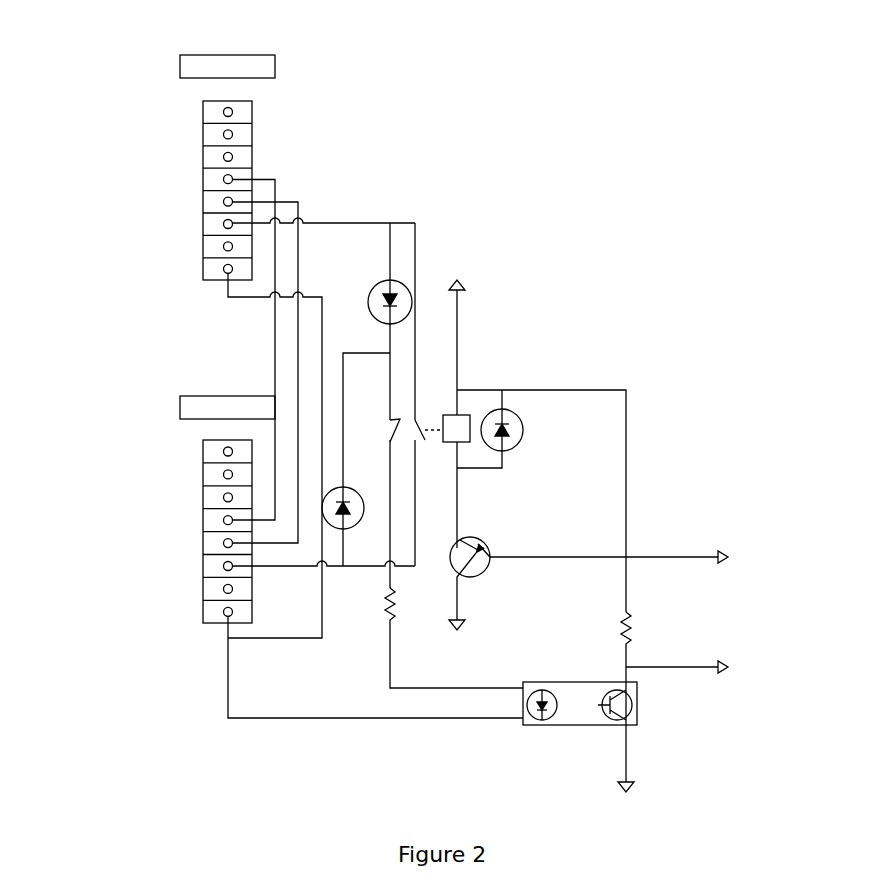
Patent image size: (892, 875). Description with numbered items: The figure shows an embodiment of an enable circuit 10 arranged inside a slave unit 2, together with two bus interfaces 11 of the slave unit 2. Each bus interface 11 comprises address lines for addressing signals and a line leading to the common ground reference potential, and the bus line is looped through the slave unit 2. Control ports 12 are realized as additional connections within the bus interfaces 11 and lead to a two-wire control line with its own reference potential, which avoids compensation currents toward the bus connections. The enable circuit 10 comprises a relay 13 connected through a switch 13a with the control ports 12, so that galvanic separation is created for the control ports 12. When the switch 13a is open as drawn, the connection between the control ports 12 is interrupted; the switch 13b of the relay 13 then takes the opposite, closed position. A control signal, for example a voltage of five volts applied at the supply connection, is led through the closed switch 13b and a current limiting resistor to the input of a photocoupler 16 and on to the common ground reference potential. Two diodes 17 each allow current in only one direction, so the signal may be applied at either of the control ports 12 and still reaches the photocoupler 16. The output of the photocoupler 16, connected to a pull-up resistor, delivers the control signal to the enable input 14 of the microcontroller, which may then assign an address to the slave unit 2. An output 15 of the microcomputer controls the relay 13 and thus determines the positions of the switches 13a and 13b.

The slave unit 2 is at (633, 122).
The enable circuit 10 is at (542, 277).
The bus interface 11 is at (173, 155).
The control port 12 is at (132, 224).
The relay 13 is at (410, 418).
The switch 13a is at (434, 447).
The switch 13b is at (380, 420).
The enable input 14 is at (701, 668).
The output 15 is at (744, 558).
The photocoupler 16 is at (556, 742).
The diode 17 is at (367, 282).